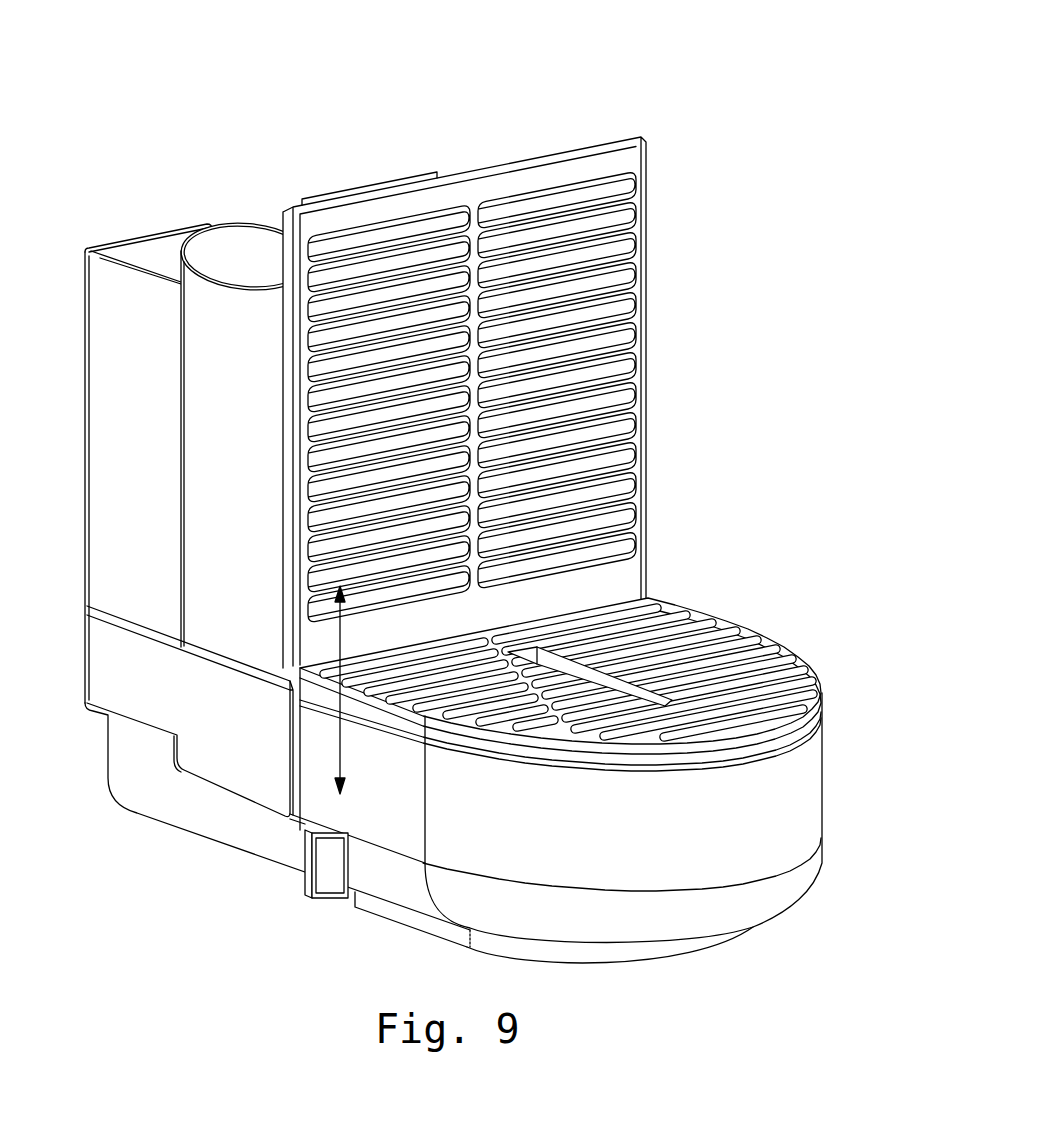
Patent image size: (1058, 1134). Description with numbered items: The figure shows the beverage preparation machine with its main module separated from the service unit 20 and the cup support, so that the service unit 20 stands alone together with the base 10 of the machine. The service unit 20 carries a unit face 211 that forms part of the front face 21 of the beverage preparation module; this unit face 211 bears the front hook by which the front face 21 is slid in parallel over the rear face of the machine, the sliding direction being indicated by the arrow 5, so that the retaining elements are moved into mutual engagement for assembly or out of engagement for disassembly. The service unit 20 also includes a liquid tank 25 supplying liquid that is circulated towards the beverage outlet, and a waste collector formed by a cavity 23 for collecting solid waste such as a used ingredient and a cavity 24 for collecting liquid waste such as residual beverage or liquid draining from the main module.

The service unit 20 is at (712, 92).
The front face 21 is at (487, 384).
The unit face 211 is at (530, 224).
The cavity for collecting solid waste material 23 is at (100, 378).
The cavity for collecting liquid waste material 24 is at (136, 803).
The liquid tank 25 is at (244, 200).
The base 10 is at (862, 718).
The arrow 5 is at (340, 650).